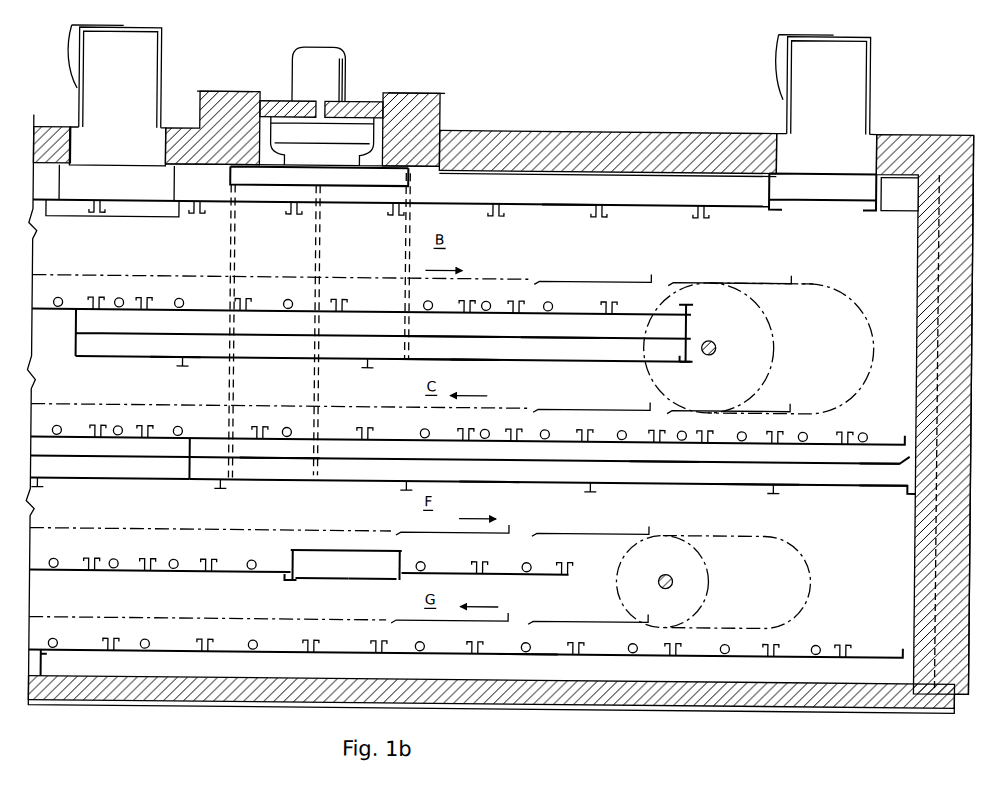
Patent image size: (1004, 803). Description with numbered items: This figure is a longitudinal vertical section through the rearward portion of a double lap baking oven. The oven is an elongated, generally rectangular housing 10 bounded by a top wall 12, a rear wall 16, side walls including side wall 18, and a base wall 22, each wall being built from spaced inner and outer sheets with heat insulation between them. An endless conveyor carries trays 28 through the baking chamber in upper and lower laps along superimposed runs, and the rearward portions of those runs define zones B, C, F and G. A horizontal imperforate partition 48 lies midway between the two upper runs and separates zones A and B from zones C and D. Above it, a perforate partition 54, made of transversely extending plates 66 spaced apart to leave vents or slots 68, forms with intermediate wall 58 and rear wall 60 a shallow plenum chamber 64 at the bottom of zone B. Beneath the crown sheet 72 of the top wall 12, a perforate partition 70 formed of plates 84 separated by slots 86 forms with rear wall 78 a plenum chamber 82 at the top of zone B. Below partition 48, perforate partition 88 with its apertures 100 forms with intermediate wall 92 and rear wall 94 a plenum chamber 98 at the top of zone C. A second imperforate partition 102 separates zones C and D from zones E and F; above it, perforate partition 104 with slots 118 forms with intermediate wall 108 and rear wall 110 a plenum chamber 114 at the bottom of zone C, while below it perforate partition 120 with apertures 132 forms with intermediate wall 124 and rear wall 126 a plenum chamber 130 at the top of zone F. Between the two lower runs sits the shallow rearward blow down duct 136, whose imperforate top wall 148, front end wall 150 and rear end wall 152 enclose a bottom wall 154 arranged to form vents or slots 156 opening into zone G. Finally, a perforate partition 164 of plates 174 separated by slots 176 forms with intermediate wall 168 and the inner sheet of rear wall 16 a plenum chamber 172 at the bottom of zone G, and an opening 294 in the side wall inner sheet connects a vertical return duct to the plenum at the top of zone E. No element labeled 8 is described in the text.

The hatched block 8 is at (243, 134).
The housing 10 is at (481, 91).
The top wall 12 is at (536, 127).
The rear wall 16 is at (971, 385).
The side wall 18 is at (378, 136).
The base wall 22 is at (597, 704).
The trays 28 is at (578, 281).
The horizontal imperforate partition 48 is at (552, 340).
The horizontal perforate partition 54 is at (190, 310).
The intermediate wall 58 is at (77, 329).
The rear wall 60 is at (688, 329).
The plenum chamber 64 is at (434, 332).
The transversely extending plates 66 is at (494, 310).
The vents or slots 68 is at (514, 300).
The horizontal perforate partition 70 is at (690, 215).
The crown sheet 72 is at (684, 172).
The rear wall 78 is at (766, 181).
The plenum chamber 82 is at (517, 193).
The transversely extending plates 84 is at (566, 207).
The vents or slots 86 is at (496, 216).
The horizontal perforate partition 88 is at (478, 362).
The intermediate wall 92 is at (77, 351).
The rear wall 94 is at (692, 351).
The plenum chamber 98 is at (434, 354).
The apertures 100 is at (168, 362).
The horizontal imperforate partition 102 is at (661, 464).
The horizontal perforate partition 104 is at (724, 437).
The intermediate wall 108 is at (187, 447).
The rear wall 110 is at (905, 452).
The plenum chamber 114 is at (494, 457).
The vents or slots 118 is at (584, 437).
The horizontal perforate partition 120 is at (745, 484).
The intermediate wall 124 is at (187, 469).
The rear wall 126 is at (906, 474).
The plenum chamber 130 is at (497, 480).
The apertures 132 is at (491, 485).
The rearward blow down duct 136 is at (359, 582).
The top wall 148 is at (346, 550).
The front end wall 150 is at (291, 554).
The rear end wall 152 is at (404, 554).
The bottom wall 154 is at (377, 582).
The vents or slots 156 is at (289, 584).
The horizontal perforate partition 164 is at (666, 655).
The intermediate wall 168 is at (48, 667).
The plenum chamber 172 is at (466, 670).
The transversely extending plates 174 is at (538, 655).
The vents or slots 176 is at (583, 656).
The opening 294 is at (277, 470).